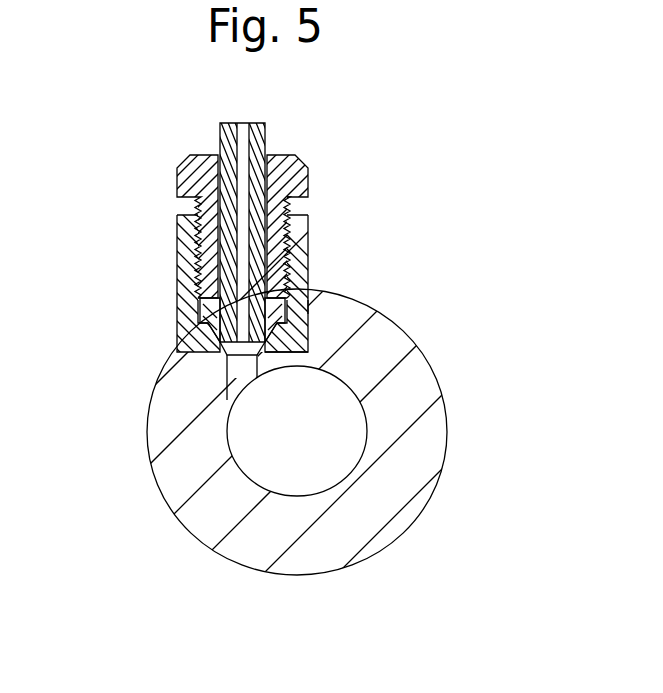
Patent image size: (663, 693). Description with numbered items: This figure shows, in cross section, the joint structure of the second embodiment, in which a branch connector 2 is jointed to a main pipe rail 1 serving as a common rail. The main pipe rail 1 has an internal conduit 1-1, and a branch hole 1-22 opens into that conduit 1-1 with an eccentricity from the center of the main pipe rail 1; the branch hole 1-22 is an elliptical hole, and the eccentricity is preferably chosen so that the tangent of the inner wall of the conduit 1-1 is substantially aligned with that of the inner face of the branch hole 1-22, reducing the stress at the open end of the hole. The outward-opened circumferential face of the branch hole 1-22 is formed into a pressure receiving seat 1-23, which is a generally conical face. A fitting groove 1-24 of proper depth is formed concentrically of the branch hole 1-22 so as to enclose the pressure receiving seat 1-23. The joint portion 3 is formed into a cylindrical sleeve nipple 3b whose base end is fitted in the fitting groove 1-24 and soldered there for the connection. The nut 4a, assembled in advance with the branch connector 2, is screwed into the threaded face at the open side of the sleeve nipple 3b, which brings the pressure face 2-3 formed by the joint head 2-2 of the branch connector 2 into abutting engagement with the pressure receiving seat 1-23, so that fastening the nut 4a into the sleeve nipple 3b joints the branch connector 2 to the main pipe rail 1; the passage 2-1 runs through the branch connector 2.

The main pipe rail 1 is at (427, 382).
The conduit 1-1 is at (362, 445).
The branch hole 1-22 is at (233, 374).
The pressure receiving seat 1-23 is at (262, 350).
The fitting groove 1-24 is at (300, 320).
The branch connector 2 is at (265, 142).
The pipe passage 2-1 is at (241, 123).
The joint head 2-2 is at (224, 315).
The pressure face 2-3 is at (309, 313).
The joint portion 3 is at (168, 237).
The sleeve nipple 3b is at (300, 248).
The nut 4a is at (302, 176).